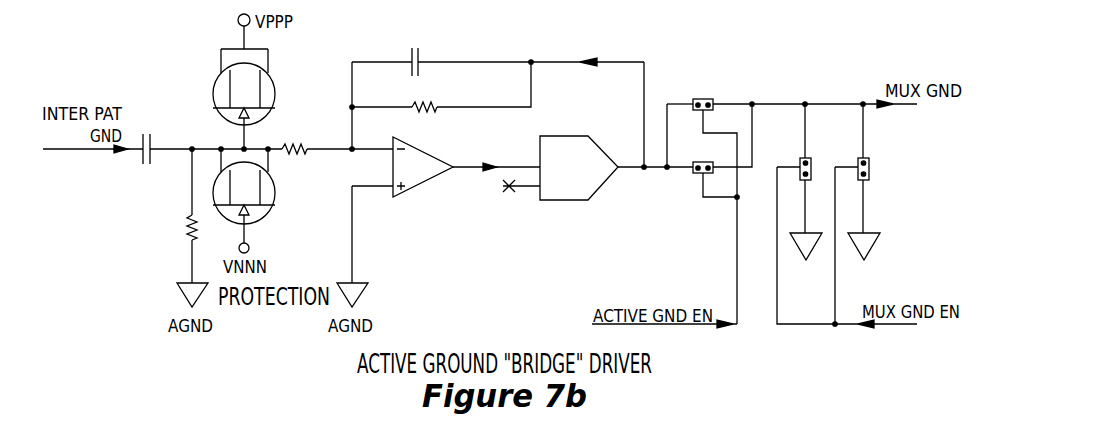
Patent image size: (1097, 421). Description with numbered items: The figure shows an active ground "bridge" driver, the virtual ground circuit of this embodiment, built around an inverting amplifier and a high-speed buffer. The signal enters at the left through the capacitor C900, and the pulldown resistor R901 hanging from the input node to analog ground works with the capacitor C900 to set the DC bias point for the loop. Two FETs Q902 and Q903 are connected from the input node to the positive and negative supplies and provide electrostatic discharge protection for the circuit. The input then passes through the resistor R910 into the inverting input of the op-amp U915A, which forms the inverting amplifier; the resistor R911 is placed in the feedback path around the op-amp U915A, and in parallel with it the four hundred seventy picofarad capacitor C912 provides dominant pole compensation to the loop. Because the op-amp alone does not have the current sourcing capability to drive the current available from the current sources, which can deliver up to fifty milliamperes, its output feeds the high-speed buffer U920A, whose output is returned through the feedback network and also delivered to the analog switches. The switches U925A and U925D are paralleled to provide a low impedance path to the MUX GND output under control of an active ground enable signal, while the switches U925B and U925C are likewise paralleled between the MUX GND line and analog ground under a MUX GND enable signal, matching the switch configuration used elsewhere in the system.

The capacitor C900 is at (204, 171).
The pulldown resistor R901 is at (175, 228).
The FET Q902 is at (209, 81).
The FET Q903 is at (276, 201).
The input resistor 1kΩ R910 is at (337, 150).
The feedback resistor 270k R911 is at (441, 95).
The feedback capacitor 470p C912 is at (498, 59).
The inverter op-amp LT1124CS8-1 U915A is at (400, 218).
The buffer BUF634F U920A is at (565, 207).
The analog switch DG412FEUE U925A is at (790, 185).
The analog switch DG412FEUE U925B is at (837, 193).
The analog switch DG412FEUE U925C is at (888, 214).
The analog switch DG412FEUE U925D is at (698, 163).